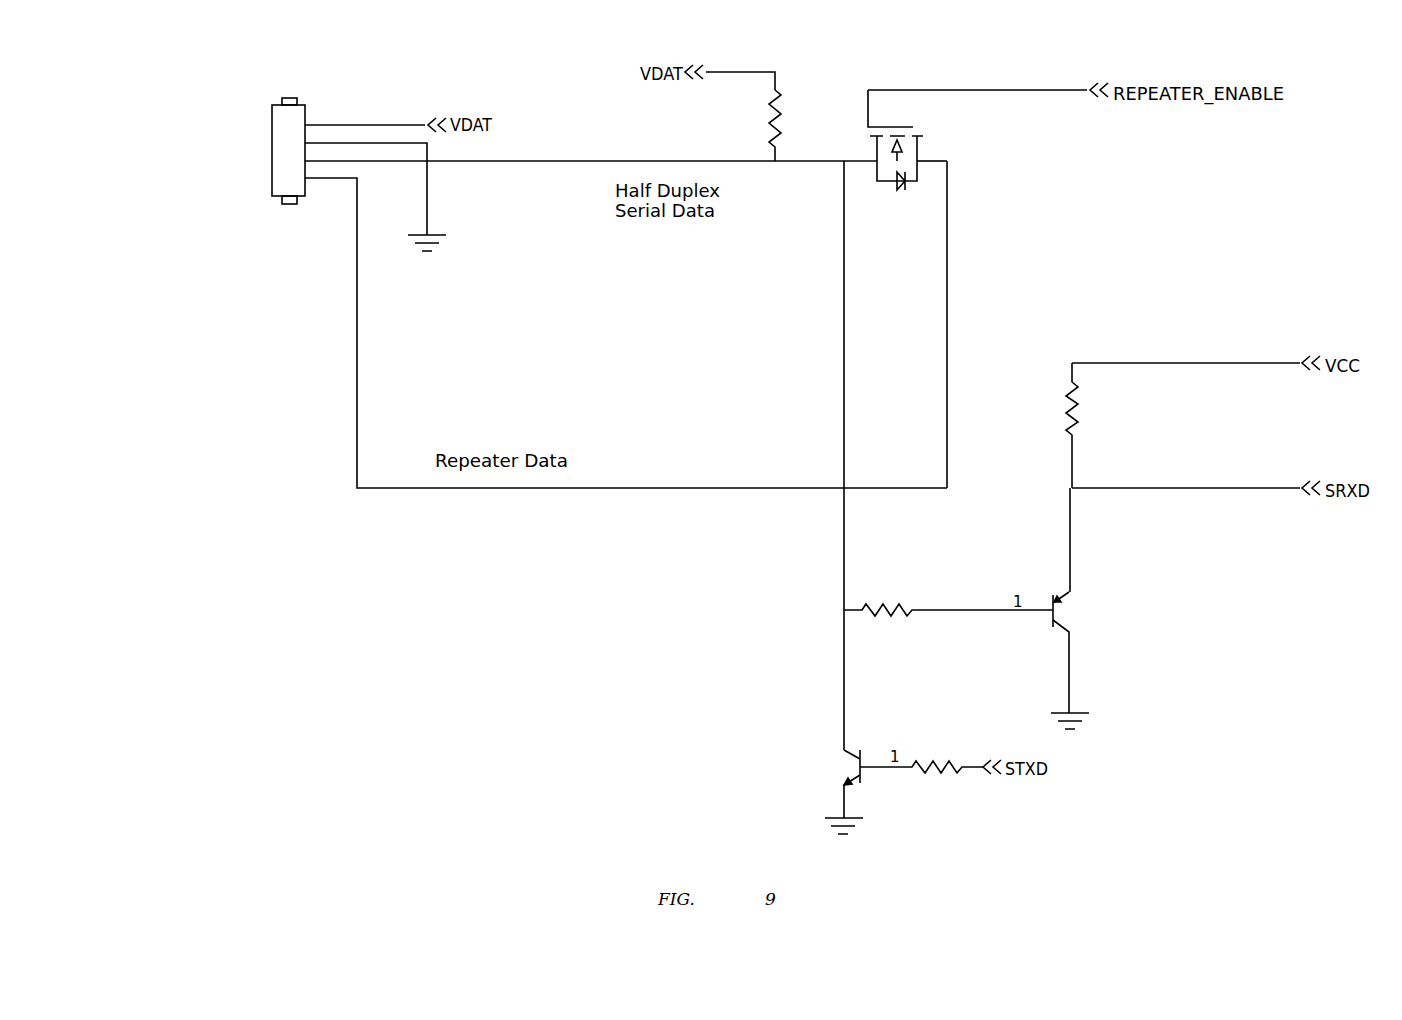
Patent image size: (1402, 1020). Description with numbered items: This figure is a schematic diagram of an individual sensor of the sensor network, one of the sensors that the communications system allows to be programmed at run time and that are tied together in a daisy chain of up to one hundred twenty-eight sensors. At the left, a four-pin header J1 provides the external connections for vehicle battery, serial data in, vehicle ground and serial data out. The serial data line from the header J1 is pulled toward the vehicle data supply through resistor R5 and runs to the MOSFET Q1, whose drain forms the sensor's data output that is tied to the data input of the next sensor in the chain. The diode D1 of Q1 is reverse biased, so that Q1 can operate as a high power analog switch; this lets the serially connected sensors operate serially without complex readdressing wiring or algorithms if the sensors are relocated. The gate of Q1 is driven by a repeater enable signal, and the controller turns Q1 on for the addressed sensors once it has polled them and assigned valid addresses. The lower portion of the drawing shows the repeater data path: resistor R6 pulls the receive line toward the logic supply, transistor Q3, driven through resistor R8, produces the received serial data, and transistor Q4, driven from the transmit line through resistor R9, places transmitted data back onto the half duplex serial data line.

The 4-pin header connector J1 is at (192, 152).
The 5k pull-up resistor R5 is at (791, 138).
The MOSFET Q1 is at (897, 174).
The diode D1 is at (906, 187).
The 10K pull-up resistor R6 is at (1099, 423).
The MMBT3906LT1 PNP transistor Q3 is at (1129, 651).
The 1k base resistor R8 is at (948, 614).
The MMBT3804LT1 NPN transistor Q4 is at (785, 779).
The 1k base resistor R9 is at (921, 781).